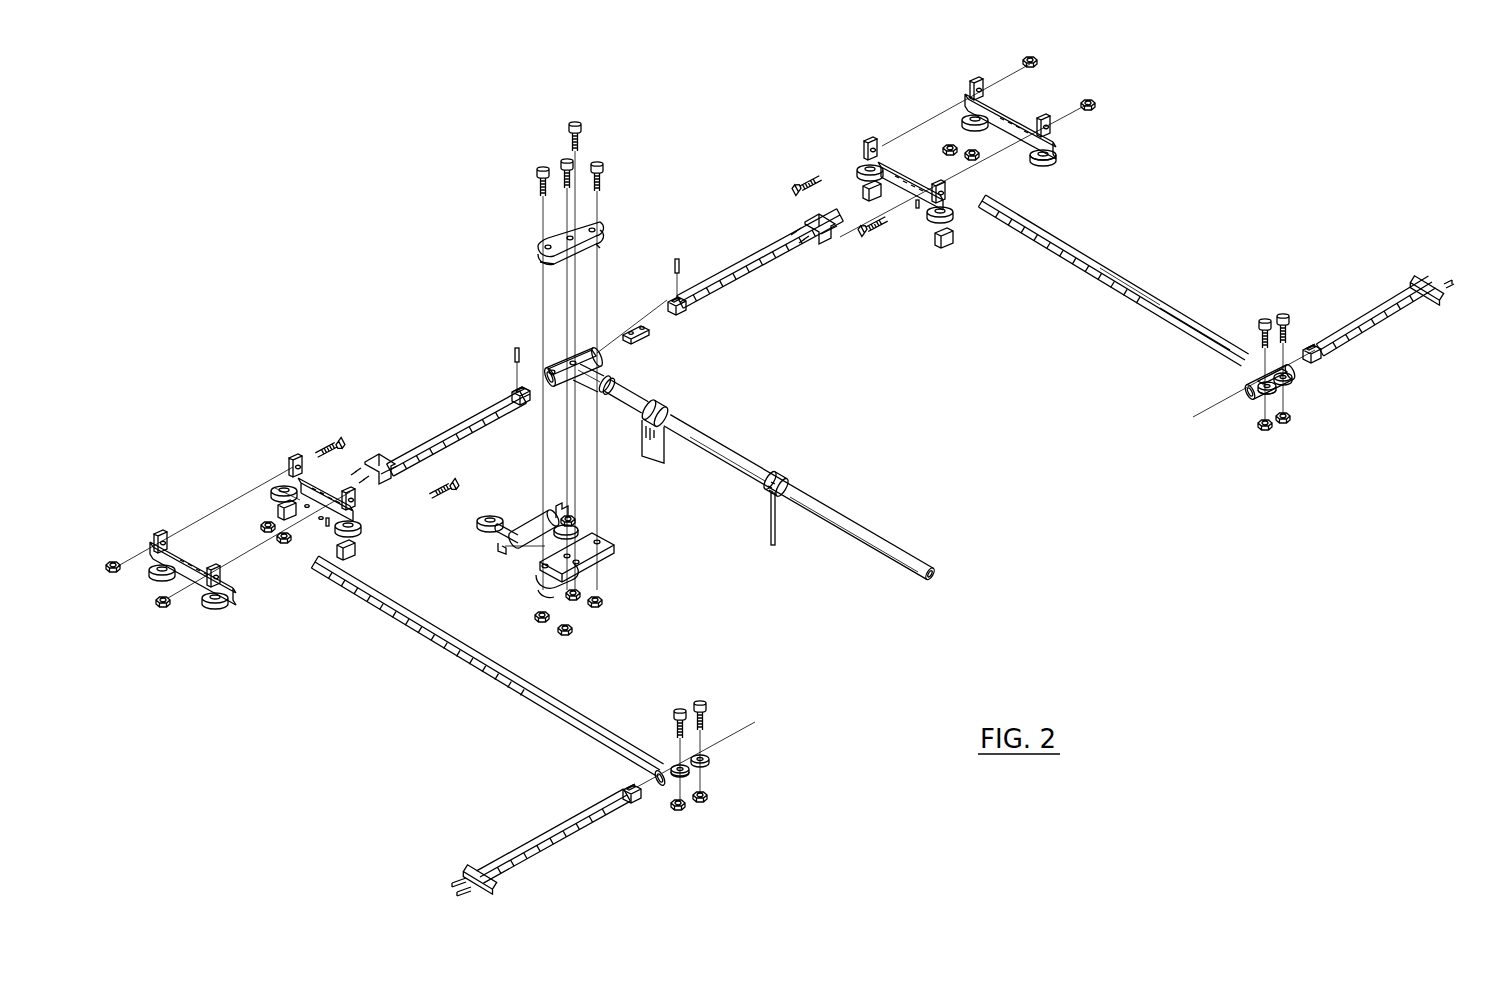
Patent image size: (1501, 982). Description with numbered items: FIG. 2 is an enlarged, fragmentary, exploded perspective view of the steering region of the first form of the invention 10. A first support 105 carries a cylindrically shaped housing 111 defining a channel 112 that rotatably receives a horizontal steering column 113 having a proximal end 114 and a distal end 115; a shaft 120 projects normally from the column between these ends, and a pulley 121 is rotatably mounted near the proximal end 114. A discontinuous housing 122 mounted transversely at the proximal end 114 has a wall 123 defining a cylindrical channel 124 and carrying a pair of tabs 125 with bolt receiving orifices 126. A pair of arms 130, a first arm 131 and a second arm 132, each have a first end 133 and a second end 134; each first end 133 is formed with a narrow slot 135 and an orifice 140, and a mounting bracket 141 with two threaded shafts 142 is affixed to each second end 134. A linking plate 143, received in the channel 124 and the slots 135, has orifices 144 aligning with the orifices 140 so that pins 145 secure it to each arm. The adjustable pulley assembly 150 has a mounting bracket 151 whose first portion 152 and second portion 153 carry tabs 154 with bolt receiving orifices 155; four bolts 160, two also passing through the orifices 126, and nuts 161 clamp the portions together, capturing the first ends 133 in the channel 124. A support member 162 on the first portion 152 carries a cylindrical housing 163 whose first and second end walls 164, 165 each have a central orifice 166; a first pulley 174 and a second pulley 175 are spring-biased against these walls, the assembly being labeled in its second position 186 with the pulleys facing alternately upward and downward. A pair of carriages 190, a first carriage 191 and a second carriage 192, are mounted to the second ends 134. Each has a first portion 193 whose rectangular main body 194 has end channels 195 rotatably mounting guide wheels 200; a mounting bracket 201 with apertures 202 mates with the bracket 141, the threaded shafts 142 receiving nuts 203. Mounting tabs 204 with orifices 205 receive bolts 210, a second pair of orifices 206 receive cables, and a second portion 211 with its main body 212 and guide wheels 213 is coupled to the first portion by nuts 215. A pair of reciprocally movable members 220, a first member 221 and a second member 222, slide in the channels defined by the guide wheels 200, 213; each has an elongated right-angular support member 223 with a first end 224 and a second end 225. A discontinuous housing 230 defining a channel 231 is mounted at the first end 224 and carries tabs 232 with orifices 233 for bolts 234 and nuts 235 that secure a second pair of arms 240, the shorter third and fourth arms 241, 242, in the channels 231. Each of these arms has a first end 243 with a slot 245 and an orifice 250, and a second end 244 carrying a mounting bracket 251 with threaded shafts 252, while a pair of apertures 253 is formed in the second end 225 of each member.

The first form of the invention 10 is at (1154, 180).
The first support 105 is at (648, 455).
The cylindrically shaped housing 111 is at (650, 400).
The channel 112 is at (668, 412).
The steering column 113 is at (742, 460).
The first or proximal end 114 is at (582, 395).
The second or distal end 115 is at (920, 570).
The shaft 120 is at (772, 508).
The pulley 121 is at (612, 388).
The discontinuous housing 122 is at (590, 352).
The wall 123 is at (588, 360).
The cylindrically shaped channel 124 is at (517, 388).
The tabs 125 is at (550, 360).
The bolt receiving orifice 126 is at (573, 358).
The pair of arms 130 is at (600, 339).
The first arm 131 is at (785, 255).
The second arm 132 is at (432, 400).
The proximal or first end 133 is at (693, 292).
The distal or second end 134 is at (418, 447).
The narrow slot 135 is at (526, 404).
The orifice 140 is at (518, 393).
The mounting bracket 141 is at (398, 477).
The threaded shafts 142 is at (372, 457).
The linking plate 143 is at (645, 333).
The orifices 144 is at (643, 326).
The pins 145 is at (517, 352).
The adjustable pulley assembly 150 is at (552, 548).
The mounting bracket 151 is at (600, 547).
The first portion 152 is at (545, 576).
The second portion 153 is at (590, 232).
The tabs 154 is at (603, 250).
The bolt receiving orifices 155 is at (602, 245).
The bolts 160 is at (545, 168).
The nuts 161 is at (572, 630).
The support member 162 is at (540, 548).
The cylindrically shaped housing 163 is at (538, 515).
The first end wall 164 is at (562, 508).
The second end wall 165 is at (515, 527).
The orifice 166 is at (500, 546).
The first pulley 174 is at (578, 521).
The second pulley 175 is at (482, 520).
The second position 186 is at (590, 527).
The pair of carriages 190 is at (608, 338).
The first carriage 191 is at (1052, 152).
The second carriage 192 is at (298, 505).
The first portion 193 is at (955, 238).
The main body 194 is at (918, 210).
The channels 195 is at (858, 168).
The guide wheels 200 is at (625, 345).
The mounting bracket 201 is at (897, 172).
The apertures 202 is at (316, 505).
The nuts 203 is at (956, 150).
The mounting tabs 204 is at (872, 143).
The orifices 205 is at (292, 462).
The orifices 206 is at (862, 190).
The bolts 210 is at (796, 184).
The second portion 211 is at (998, 108).
The main body 212 is at (1010, 120).
The guide wheels 213 is at (958, 210).
The nuts 215 is at (1032, 55).
The reciprocally movable members 220 is at (764, 485).
The first member 221 is at (1128, 250).
The second member 222 is at (495, 674).
The elongated support member 223 is at (1178, 308).
The first end 224 is at (1276, 388).
The second end 225 is at (1040, 228).
The discontinuous housing 230 is at (1250, 362).
The channel 231 is at (1250, 400).
The tabs 232 is at (1276, 396).
The orifices 233 is at (1292, 377).
The bolts 234 is at (1277, 316).
The nuts 235 is at (1288, 422).
The second pair of arms 240 is at (940, 571).
The third arm 241 is at (1362, 316).
The fourth arm 242 is at (565, 822).
The first or proximal end 243 is at (1332, 330).
The second or distal end 244 is at (1405, 321).
The slot 245 is at (1322, 352).
The orifice 250 is at (1312, 345).
The mounting bracket 251 is at (1444, 290).
The threaded shafts 252 is at (1449, 281).
The apertures 253 is at (327, 570).